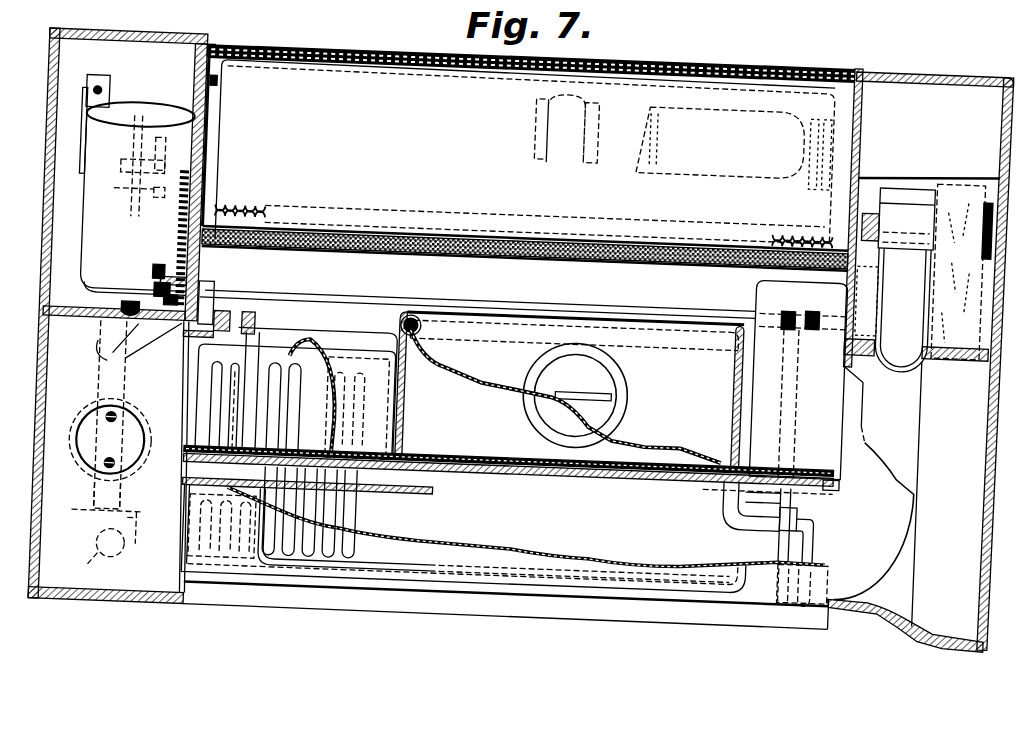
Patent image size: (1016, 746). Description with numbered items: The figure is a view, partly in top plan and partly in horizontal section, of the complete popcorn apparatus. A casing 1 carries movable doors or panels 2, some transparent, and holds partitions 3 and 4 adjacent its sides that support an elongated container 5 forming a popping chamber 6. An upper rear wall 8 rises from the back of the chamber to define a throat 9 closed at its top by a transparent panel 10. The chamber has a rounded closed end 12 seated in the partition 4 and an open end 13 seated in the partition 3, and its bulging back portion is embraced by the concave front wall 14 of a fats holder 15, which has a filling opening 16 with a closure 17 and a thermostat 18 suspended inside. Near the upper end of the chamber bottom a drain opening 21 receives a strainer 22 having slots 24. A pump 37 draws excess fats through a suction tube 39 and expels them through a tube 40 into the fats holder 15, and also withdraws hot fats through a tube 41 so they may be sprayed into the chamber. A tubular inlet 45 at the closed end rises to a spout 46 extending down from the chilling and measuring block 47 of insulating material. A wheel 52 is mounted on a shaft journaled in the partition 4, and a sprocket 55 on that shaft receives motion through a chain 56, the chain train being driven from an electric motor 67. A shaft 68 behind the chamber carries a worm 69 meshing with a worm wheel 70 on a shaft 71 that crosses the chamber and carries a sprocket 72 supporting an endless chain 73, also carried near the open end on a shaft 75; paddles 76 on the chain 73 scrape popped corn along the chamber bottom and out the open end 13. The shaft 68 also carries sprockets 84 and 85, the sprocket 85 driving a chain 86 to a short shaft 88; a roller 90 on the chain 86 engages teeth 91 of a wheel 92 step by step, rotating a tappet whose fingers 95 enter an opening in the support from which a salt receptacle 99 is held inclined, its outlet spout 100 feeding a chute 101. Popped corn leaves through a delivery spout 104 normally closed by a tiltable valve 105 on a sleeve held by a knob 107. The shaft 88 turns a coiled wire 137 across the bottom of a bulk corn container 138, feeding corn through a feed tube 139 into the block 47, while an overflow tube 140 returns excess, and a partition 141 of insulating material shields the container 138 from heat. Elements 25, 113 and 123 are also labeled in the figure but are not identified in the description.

The casing 1 is at (940, 588).
The movable doors and/or panels 2 is at (0, 348).
The partition 3 is at (217, 183).
The partition 4 is at (859, 218).
The elongated container 5 is at (250, 292).
The popping chamber 6 is at (562, 496).
The upper rear wall 8 is at (573, 347).
The throat 9 is at (492, 412).
The transparent panel 10 is at (372, 497).
The rounded closed end 12 is at (882, 440).
The open end 13 is at (150, 452).
The concave front wall 14 is at (163, 412).
The fats holder 15 is at (569, 389).
The filling opening 16 is at (504, 352).
The closure 17 is at (565, 335).
The thermostat 18 is at (432, 327).
The drain opening 21 is at (159, 346).
The strainer 22 is at (312, 382).
The slots 24 is at (275, 315).
The fin 25 is at (334, 407).
The pump 37 is at (806, 529).
The suction tube 39 is at (746, 495).
The tube 40 is at (734, 505).
The tube 41 is at (697, 342).
The tubular inlet 45 is at (899, 493).
The spout 46 is at (892, 310).
The block of insulating material 47 is at (959, 260).
The wheel 52 is at (870, 126).
The sprocket 55 is at (986, 250).
The chain 56 is at (906, 228).
The electric motor 67 is at (660, 118).
The shaft 68 is at (556, 262).
The screw or worm 69 is at (799, 379).
The worm wheel 70 is at (820, 307).
The shaft 71 is at (762, 380).
The sprocket 72 is at (848, 489).
The endless chain 73 is at (357, 408).
The shaft 75 is at (195, 402).
The paddles 76 is at (178, 322).
The sprocket 84 is at (112, 250).
The sprocket 85 is at (222, 288).
The chain 86 is at (134, 208).
The short shaft 88 is at (241, 195).
The roller 90 is at (128, 186).
The tooth 91 is at (153, 205).
The wheel 92 is at (173, 147).
The fingers 95 is at (86, 114).
The receptacle 99 is at (40, 200).
The outlet spout 100 is at (80, 275).
The chute 101 is at (74, 305).
The delivery spout 104 is at (99, 417).
The tiltable valve 105 is at (52, 385).
The knob 107 is at (147, 544).
The fitting 113 is at (89, 555).
The switch 123 is at (786, 152).
The coiled wire 137 is at (546, 207).
The container 138 is at (528, 153).
The feed tube 139 is at (775, 176).
The overflow tube 140 is at (890, 194).
The partition of insulating material 141 is at (420, 212).